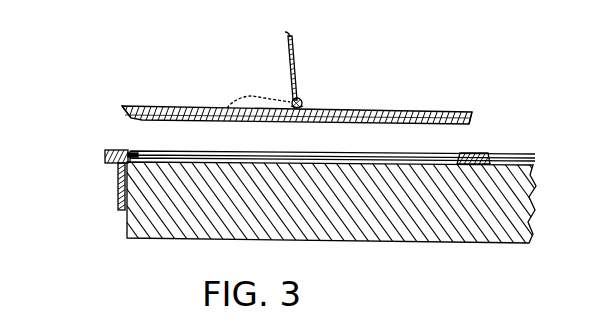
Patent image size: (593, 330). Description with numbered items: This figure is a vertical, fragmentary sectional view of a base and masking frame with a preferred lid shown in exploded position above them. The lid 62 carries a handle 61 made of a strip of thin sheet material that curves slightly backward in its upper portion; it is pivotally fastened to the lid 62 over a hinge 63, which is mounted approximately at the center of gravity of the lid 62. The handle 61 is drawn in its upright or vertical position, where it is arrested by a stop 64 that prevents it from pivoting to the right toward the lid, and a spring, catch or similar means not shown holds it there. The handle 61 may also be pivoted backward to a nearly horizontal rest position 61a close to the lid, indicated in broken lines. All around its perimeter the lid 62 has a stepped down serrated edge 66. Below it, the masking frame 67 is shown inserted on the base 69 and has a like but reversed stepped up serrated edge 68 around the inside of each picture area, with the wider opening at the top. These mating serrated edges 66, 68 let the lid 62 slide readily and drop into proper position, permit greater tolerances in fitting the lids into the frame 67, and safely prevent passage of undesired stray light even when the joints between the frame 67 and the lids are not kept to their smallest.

The handle 61 is at (299, 57).
The rest position 61a is at (247, 95).
The lid 62 is at (413, 112).
The hinge 63 is at (292, 102).
The stop 64 is at (304, 102).
The stepped down serrated edge 66 is at (122, 108).
The masking frame 67 is at (309, 211).
The stepped up serrated edge 68 is at (130, 152).
The base 69 is at (468, 244).